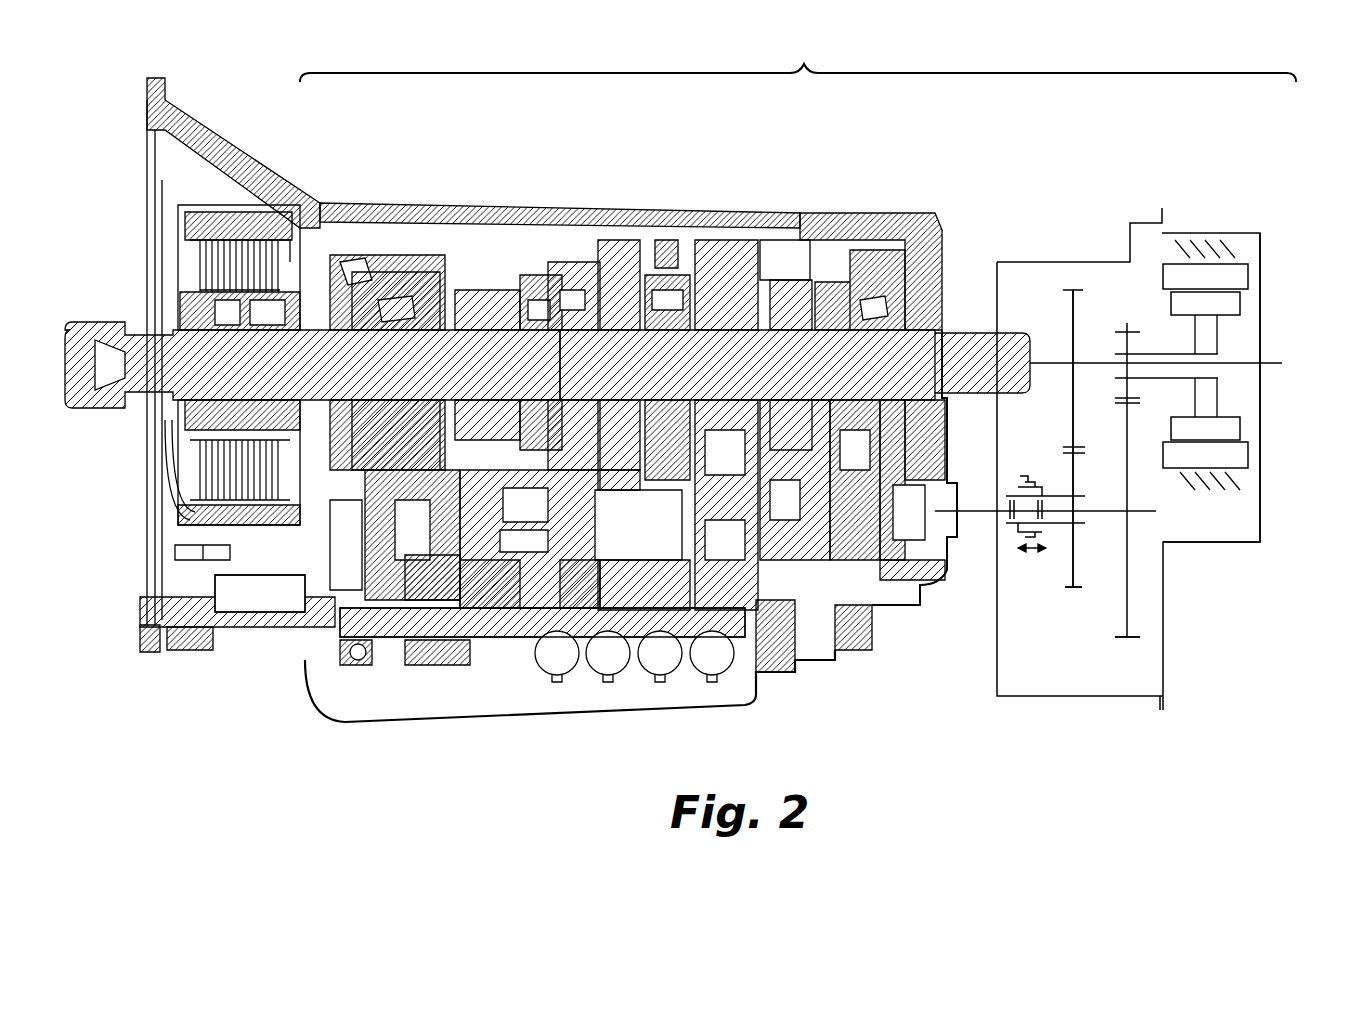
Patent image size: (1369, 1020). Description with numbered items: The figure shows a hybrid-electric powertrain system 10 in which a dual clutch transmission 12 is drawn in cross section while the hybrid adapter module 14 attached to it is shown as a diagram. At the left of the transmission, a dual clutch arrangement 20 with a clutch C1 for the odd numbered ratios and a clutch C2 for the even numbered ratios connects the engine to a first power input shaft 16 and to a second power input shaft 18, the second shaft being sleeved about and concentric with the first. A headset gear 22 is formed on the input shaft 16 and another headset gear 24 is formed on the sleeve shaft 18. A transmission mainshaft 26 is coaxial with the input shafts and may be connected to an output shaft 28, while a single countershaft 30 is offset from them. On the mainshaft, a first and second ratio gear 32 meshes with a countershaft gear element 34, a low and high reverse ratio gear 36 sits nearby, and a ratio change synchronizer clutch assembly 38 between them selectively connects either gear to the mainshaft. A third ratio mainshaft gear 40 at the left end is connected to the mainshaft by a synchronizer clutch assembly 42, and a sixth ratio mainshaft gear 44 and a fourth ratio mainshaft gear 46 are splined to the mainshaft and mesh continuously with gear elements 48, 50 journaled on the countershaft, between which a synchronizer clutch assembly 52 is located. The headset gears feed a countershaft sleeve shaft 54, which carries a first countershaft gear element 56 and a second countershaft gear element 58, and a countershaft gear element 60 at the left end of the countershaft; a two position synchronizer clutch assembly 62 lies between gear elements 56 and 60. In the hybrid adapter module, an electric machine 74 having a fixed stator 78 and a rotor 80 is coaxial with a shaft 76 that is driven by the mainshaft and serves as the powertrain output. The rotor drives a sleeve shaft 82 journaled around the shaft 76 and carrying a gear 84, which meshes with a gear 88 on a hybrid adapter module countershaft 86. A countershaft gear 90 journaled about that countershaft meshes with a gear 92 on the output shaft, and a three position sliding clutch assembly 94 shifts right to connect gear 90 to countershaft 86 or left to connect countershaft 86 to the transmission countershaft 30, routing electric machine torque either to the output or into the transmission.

The hybrid-electric powertrain system 10 is at (798, 60).
The dual clutch transmission 12 is at (692, 140).
The hybrid adapter module 14 is at (1068, 262).
The first power input shaft 16 is at (306, 374).
The second power input shaft 18 is at (345, 325).
The dual clutch arrangement 20 is at (180, 560).
The headset gear 22 is at (485, 300).
The headset gear 24 is at (385, 300).
The transmission mainshaft 26 is at (748, 374).
The output shaft 28 is at (1275, 362).
The countershaft 30 is at (648, 530).
The first ratio and second ratio gear 32 is at (620, 258).
The countershaft gear element 34 is at (648, 618).
The low reverse ratio and high reverse ratio gear 36 is at (715, 262).
The ratio change synchronizer clutch assembly 38 is at (668, 268).
The third ratio mainshaft gear 40 is at (572, 282).
The synchronizer clutch assembly 42 is at (532, 308).
The sixth ratio mainshaft gear 44 is at (797, 308).
The fourth ratio mainshaft gear 46 is at (875, 282).
The gear element 48 is at (788, 573).
The gear element 50 is at (870, 552).
The synchronizer clutch assembly 52 is at (887, 550).
The countershaft sleeve shaft 54 is at (538, 520).
The first countershaft gear element 56 is at (473, 587).
The second countershaft gear element 58 is at (620, 578).
The countershaft gear element 60 is at (387, 568).
The synchronizer clutch assembly 62 is at (423, 557).
The electric machine 74 is at (1228, 508).
The shaft 76 is at (1062, 385).
The stator 78 is at (1250, 455).
The rotor 80 is at (1243, 430).
The sleeve shaft 82 is at (1180, 352).
The gear 84 is at (1122, 332).
The hybrid adapter module countershaft 86 is at (1140, 511).
The gear 88 is at (1135, 640).
The countershaft gear 90 is at (1082, 590).
The gear 92 is at (1068, 292).
The sliding clutch assembly 94 is at (1030, 556).
The clutch C1 is at (212, 495).
The clutch C2 is at (245, 500).